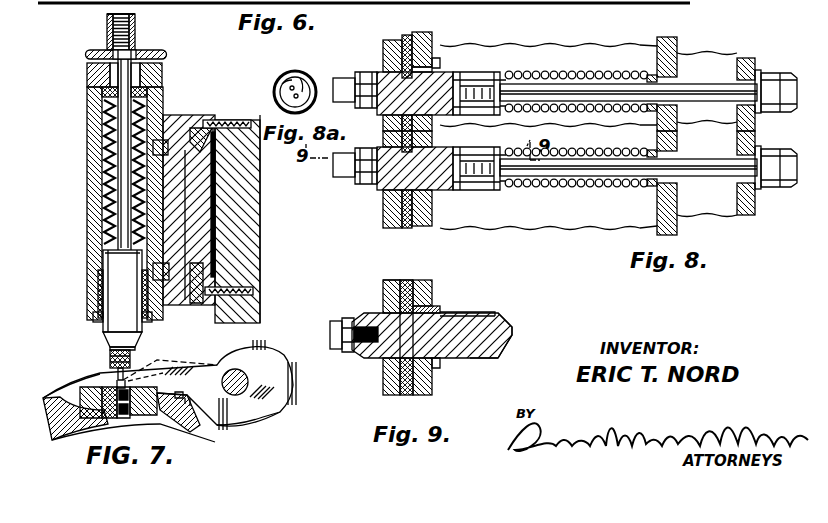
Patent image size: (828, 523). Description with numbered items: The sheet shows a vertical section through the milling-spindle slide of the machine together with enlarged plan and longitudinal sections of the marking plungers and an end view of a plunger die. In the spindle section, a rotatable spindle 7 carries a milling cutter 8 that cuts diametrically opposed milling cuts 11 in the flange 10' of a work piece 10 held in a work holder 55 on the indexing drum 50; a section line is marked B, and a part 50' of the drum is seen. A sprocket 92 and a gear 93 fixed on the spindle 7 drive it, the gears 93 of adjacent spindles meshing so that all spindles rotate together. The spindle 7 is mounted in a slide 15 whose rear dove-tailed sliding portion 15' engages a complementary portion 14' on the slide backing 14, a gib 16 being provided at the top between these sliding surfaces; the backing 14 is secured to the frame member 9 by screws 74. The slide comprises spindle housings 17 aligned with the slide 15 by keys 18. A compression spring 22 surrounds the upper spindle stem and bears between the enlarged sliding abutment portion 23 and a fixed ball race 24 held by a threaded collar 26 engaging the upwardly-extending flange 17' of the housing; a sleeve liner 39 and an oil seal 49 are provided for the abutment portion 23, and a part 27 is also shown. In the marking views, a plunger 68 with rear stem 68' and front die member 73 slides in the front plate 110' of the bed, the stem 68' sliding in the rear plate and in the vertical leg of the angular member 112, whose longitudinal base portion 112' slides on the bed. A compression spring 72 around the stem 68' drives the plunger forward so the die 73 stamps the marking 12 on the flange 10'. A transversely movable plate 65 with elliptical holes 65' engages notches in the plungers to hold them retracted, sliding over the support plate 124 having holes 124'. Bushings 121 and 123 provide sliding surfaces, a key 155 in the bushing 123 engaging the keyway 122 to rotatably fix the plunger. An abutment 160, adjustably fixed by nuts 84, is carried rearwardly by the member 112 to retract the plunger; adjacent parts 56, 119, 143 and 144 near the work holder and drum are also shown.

In FIG. 7, the rotatable spindle 7 is at (118, 17).
In FIG. 7, the milling cutter 8 is at (128, 378).
In FIG. 7, the frame member 9 is at (258, 215).
In FIG. 7, the work piece 10 is at (133, 413).
In FIG. 7, the flange 10' is at (101, 370).
In FIG. 7, the milling cut 11 is at (135, 380).
In FIG. 6, the marking 12 is at (302, 74).
In FIG. 7, the slide backing 14 is at (255, 221).
In FIG. 7, the complementary dove-tailed portion 14' is at (221, 205).
In FIG. 7, the slide 15 is at (231, 225).
In FIG. 7, the dove-tailed sliding portion 15' is at (247, 150).
In FIG. 7, the gib 16 is at (200, 135).
In FIG. 7, the spindle housing 17 is at (96, 203).
In FIG. 7, the upwardly-extending flange 17' is at (67, 201).
In FIG. 7, the key 18 is at (166, 125).
In FIG. 7, the compression spring 22 is at (100, 155).
In FIG. 7, the enlarged sliding abutment portion 23 is at (118, 260).
In FIG. 7, the ball race 24 is at (88, 130).
In FIG. 7, the threaded collar 26 is at (95, 98).
In FIG. 7, the threaded stem 27 is at (110, 34).
In FIG. 7, the sleeve liner 39 is at (100, 288).
In FIG. 7, the oil seal 49 is at (95, 315).
In FIG. 7, the drum 50 is at (150, 443).
In FIG. 7, the manifold arc 50' is at (68, 408).
In FIG. 7, the work holder 55 is at (105, 378).
In FIG. 7, the plate 56 is at (102, 412).
In FIG. 8A, the transversely movable plate 65 is at (412, 67).
In FIG. 9, the transversely movable plate 65 is at (412, 264).
In FIG. 8, the elliptical hole 65' is at (429, 182).
In FIG. 9, the elliptical hole 65' is at (384, 347).
In FIG. 6, the plunger 68 is at (284, 60).
In FIG. 8A, the plunger 68 is at (516, 59).
In FIG. 8, the plunger 68 is at (504, 201).
In FIG. 9, the plunger 68 is at (487, 376).
In FIG. 8A, the plunger stem 68' is at (628, 57).
In FIG. 8, the plunger stem 68' is at (628, 149).
In FIG. 9, the plunger stem 68' is at (533, 331).
In FIG. 8A, the compression spring 72 is at (534, 72).
In FIG. 8, the compression spring 72 is at (564, 150).
In FIG. 6, the die member 73 is at (280, 82).
In FIG. 8A, the die member 73 is at (340, 78).
In FIG. 8, the die member 73 is at (340, 174).
In FIG. 9, the die member 73 is at (336, 321).
In FIG. 7, the screw 74 is at (246, 120).
In FIG. 8A, the nut 84 is at (778, 74).
In FIG. 8, the nut 84 is at (772, 187).
In FIG. 7, the sprocket 92 is at (137, 52).
In FIG. 7, the gear 93 is at (162, 70).
In FIG. 8A, the front plate 110' is at (437, 67).
In FIG. 8, the front plate 110' is at (440, 196).
In FIG. 9, the front plate 110' is at (440, 320).
In FIG. 8A, the angular member 112 is at (591, 70).
In FIG. 8, the longitudinal base portion 112' is at (596, 233).
In FIG. 7, the gasket 119 is at (90, 418).
In FIG. 8A, the bushing 121 is at (650, 74).
In FIG. 8, the bushing 121 is at (650, 186).
In FIG. 8A, the keyway 122 is at (470, 78).
In FIG. 8, the keyway 122 is at (480, 152).
In FIG. 9, the keyway 122 is at (482, 314).
In FIG. 8A, the bushing 123 is at (448, 70).
In FIG. 8, the bushing 123 is at (440, 200).
In FIG. 9, the bushing 123 is at (436, 360).
In FIG. 8A, the support plate 124 is at (384, 67).
In FIG. 9, the support plate 124 is at (376, 265).
In FIG. 8, the hole 124' is at (377, 181).
In FIG. 9, the hole 124' is at (375, 337).
In FIG. 7, the arm 143 is at (190, 378).
In FIG. 7, the arm edge 144 is at (243, 392).
In FIG. 9, the key 155 is at (440, 310).
In FIG. 8A, the abutment 160 is at (761, 72).
In FIG. 8, the abutment 160 is at (758, 190).
In FIG. 7, the section B is at (50, 382).